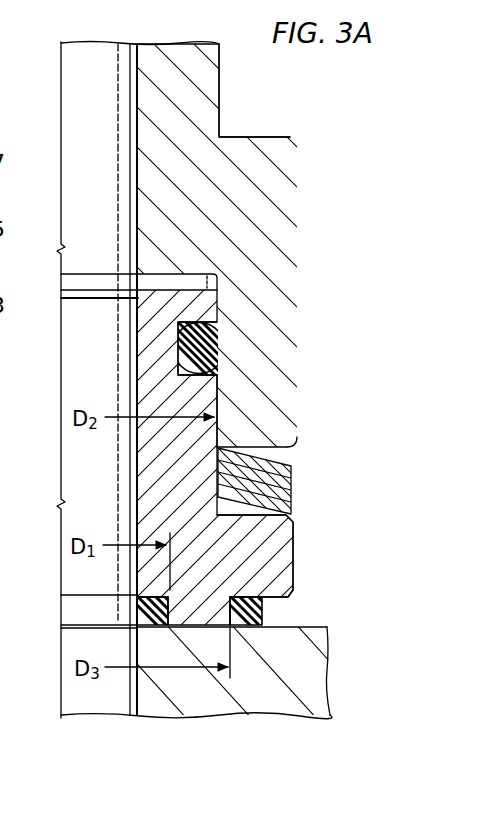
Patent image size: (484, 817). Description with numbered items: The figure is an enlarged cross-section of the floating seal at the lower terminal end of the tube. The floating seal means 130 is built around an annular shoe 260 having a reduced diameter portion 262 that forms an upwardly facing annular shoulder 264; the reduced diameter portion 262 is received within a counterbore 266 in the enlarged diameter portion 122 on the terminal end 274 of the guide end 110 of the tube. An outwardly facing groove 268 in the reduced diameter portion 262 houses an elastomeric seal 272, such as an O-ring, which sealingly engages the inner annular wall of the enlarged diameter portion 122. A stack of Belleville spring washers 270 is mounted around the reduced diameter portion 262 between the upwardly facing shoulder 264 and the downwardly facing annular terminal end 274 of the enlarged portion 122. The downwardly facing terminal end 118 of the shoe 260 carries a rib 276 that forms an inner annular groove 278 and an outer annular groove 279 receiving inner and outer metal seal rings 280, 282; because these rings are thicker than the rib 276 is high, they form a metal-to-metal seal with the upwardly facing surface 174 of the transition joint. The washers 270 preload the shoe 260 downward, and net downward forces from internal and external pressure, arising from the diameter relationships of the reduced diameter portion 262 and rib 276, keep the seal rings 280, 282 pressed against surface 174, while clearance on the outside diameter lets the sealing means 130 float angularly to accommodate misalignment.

The guide end 110 is at (219, 95).
The enlarged diameter portion 122 is at (297, 207).
The counterbore 266 is at (207, 284).
The outwardly facing groove 268 is at (213, 323).
The elastomeric seal 272 is at (213, 348).
The reduced diameter portion 262 is at (213, 392).
The terminal end 274 is at (292, 449).
The floating seal means 130 is at (303, 463).
The Belleville spring washers 270 is at (292, 488).
The upwardly facing annular shoulder 264 is at (293, 526).
The rib 276 is at (220, 600).
The outer annular groove 279 is at (256, 590).
The outer annular metal seal ring 282 is at (263, 610).
The upwardly facing surface 174 is at (310, 630).
The downwardly facing terminal end 118 is at (203, 628).
The annular shoe 260 is at (150, 463).
The inner annular groove 278 is at (147, 588).
The inner annular metal seal ring 280 is at (137, 610).